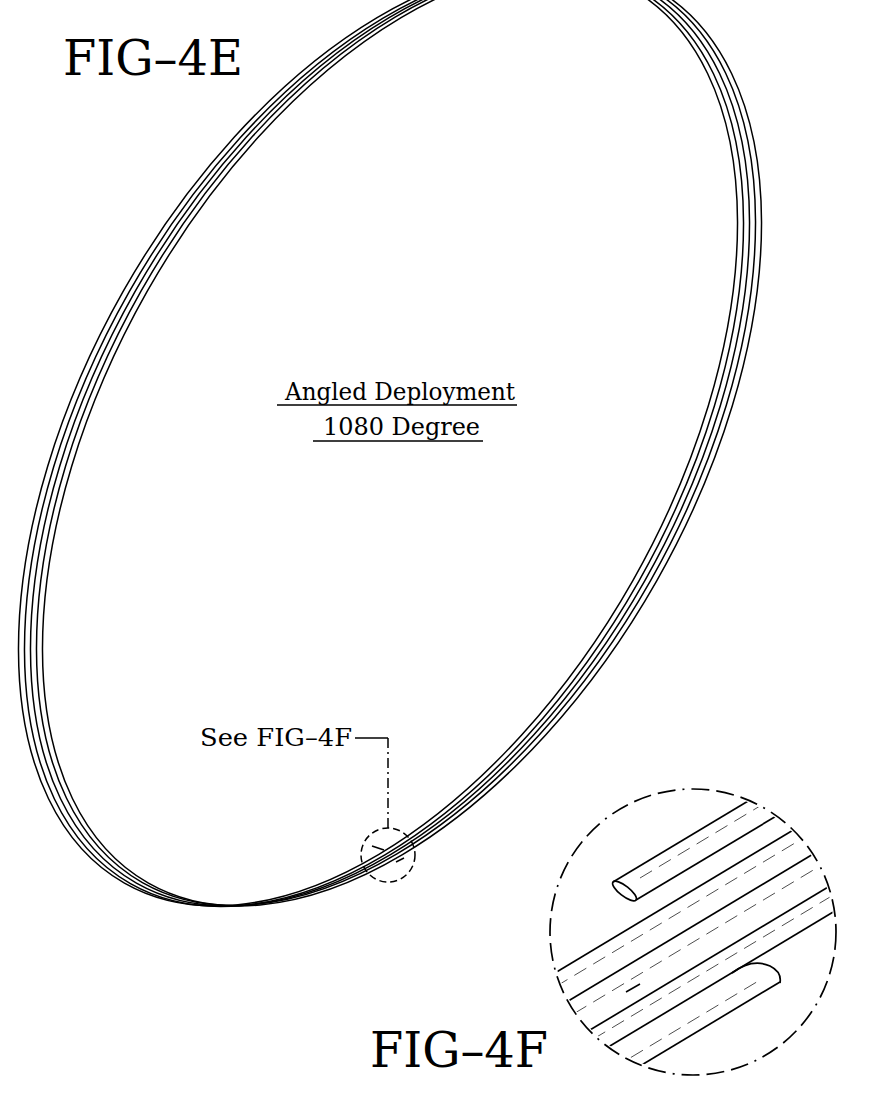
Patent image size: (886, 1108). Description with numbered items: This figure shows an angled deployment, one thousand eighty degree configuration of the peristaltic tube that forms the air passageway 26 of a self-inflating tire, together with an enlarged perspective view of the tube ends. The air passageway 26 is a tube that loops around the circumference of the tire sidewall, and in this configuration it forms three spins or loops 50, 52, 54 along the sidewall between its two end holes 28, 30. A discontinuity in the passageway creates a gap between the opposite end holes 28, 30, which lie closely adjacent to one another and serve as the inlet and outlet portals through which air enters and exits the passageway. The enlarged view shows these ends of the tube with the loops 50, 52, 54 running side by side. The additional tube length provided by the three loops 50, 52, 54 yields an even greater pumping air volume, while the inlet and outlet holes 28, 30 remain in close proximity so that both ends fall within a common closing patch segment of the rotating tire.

In FIG. 4E, the air passageway 26 is at (638, 613).
In FIG. 4E, the passageway end hole 28 is at (400, 862).
In FIG. 4F, the passageway end hole 28 is at (757, 963).
In FIG. 4E, the passageway end hole 30 is at (382, 850).
In FIG. 4F, the passageway end hole 30 is at (623, 898).
In FIG. 4F, the loop 50 is at (695, 842).
In FIG. 4F, the loop 52 is at (778, 848).
In FIG. 4F, the loop 54 is at (630, 990).